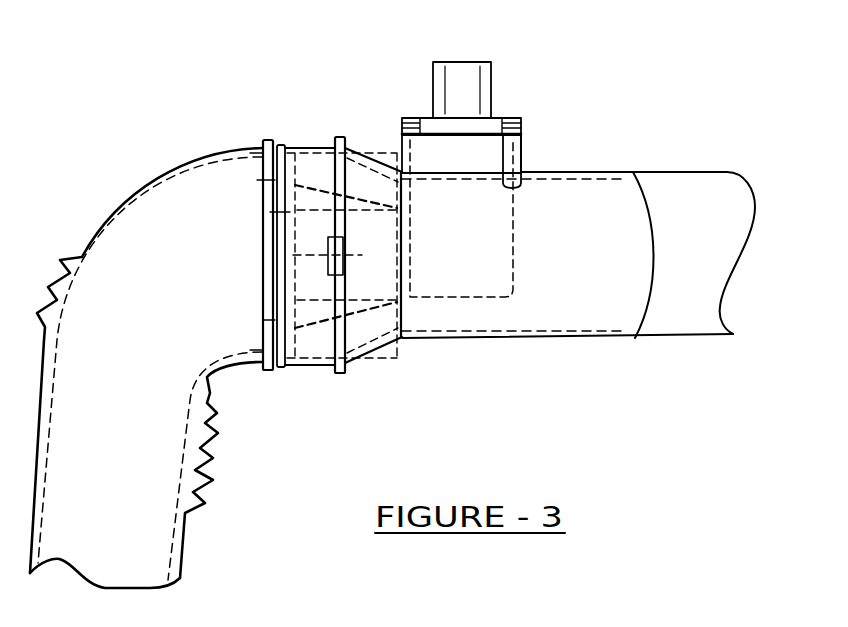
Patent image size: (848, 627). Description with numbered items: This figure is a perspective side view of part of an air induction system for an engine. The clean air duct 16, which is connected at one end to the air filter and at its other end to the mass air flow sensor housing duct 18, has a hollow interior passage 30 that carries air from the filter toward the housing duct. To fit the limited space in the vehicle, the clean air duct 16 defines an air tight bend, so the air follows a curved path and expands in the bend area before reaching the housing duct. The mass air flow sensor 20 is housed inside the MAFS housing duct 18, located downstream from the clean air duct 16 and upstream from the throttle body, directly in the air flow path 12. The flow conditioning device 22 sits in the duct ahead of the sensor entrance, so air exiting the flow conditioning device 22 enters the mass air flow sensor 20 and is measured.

The air flow path 12 is at (232, 250).
The clean air duct 16 is at (153, 545).
The mass air flow sensor housing duct 18 is at (612, 203).
The mass air flow sensor 20 is at (500, 80).
The flow conditioning device 22 is at (378, 283).
The hollow interior passage 30 is at (106, 549).